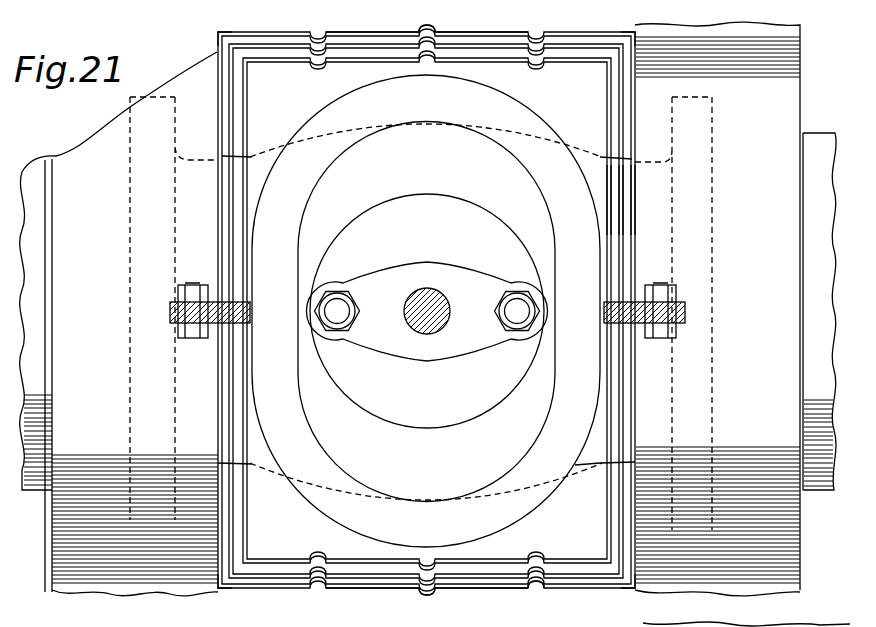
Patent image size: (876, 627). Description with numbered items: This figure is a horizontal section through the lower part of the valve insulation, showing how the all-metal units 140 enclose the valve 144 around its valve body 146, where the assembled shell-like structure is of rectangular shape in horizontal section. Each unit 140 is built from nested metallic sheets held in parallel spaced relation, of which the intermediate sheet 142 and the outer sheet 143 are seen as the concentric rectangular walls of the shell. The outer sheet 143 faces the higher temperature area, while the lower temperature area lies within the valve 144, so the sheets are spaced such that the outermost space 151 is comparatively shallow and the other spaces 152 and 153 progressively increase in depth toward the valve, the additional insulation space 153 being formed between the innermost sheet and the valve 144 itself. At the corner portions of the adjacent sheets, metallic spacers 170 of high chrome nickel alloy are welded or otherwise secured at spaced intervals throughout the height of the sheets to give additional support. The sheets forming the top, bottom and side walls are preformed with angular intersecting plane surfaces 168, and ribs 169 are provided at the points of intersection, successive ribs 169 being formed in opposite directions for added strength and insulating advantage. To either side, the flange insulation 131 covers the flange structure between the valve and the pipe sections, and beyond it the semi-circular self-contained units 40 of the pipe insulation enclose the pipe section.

The semi-circular self-contained unit 40 is at (28, 491).
The flange insulation structure 131 is at (52, 588).
The all-metal unit 140 is at (461, 313).
The metallic sheet 142 is at (608, 87).
The metallic sheet 143 is at (620, 101).
The valve 144 is at (632, 118).
The valve body 146 is at (575, 466).
The outermost space 151 is at (628, 218).
The space 152 is at (615, 200).
The additional insulation space 153 is at (598, 177).
The angular intersecting plane surfaces 168 is at (377, 27).
The rib 169 is at (428, 33).
The metallic spacer 170 is at (250, 30).